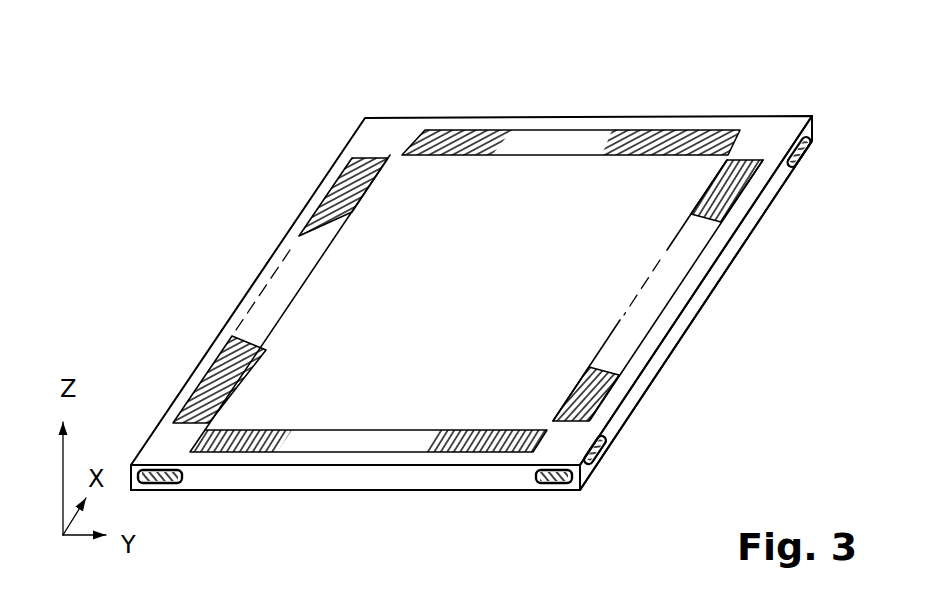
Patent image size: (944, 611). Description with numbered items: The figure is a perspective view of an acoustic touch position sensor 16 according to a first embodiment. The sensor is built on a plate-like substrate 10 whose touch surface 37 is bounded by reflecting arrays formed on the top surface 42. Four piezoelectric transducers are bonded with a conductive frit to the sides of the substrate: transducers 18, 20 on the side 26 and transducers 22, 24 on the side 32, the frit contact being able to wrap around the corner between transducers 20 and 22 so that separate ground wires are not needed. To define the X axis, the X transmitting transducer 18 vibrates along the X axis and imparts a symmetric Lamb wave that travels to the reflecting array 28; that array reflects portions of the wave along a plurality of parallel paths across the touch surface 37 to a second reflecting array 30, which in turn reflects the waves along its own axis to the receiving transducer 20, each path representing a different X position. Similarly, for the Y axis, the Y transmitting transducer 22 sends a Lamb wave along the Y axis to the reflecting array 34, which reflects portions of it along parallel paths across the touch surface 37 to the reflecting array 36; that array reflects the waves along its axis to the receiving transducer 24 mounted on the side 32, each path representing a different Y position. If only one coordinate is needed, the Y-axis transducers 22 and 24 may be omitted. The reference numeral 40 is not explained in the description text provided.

The substrate 10 is at (374, 133).
The touch position sensor 16 is at (639, 107).
The X transmitting transducer 18 is at (176, 483).
The receiving transducer 20 is at (557, 487).
The Y transmitting transducer 22 is at (604, 447).
The receiving transducer 24 is at (810, 135).
The side 26 is at (440, 478).
The reflecting array 28 is at (212, 354).
The second reflecting array 30 is at (614, 368).
The side 32 is at (780, 188).
The reflecting array 34 is at (383, 416).
The reflecting array 36 is at (587, 168).
The touch surface 37 is at (474, 289).
The reflective array (left upper) 40 is at (361, 272).
The top surface 42 is at (367, 498).